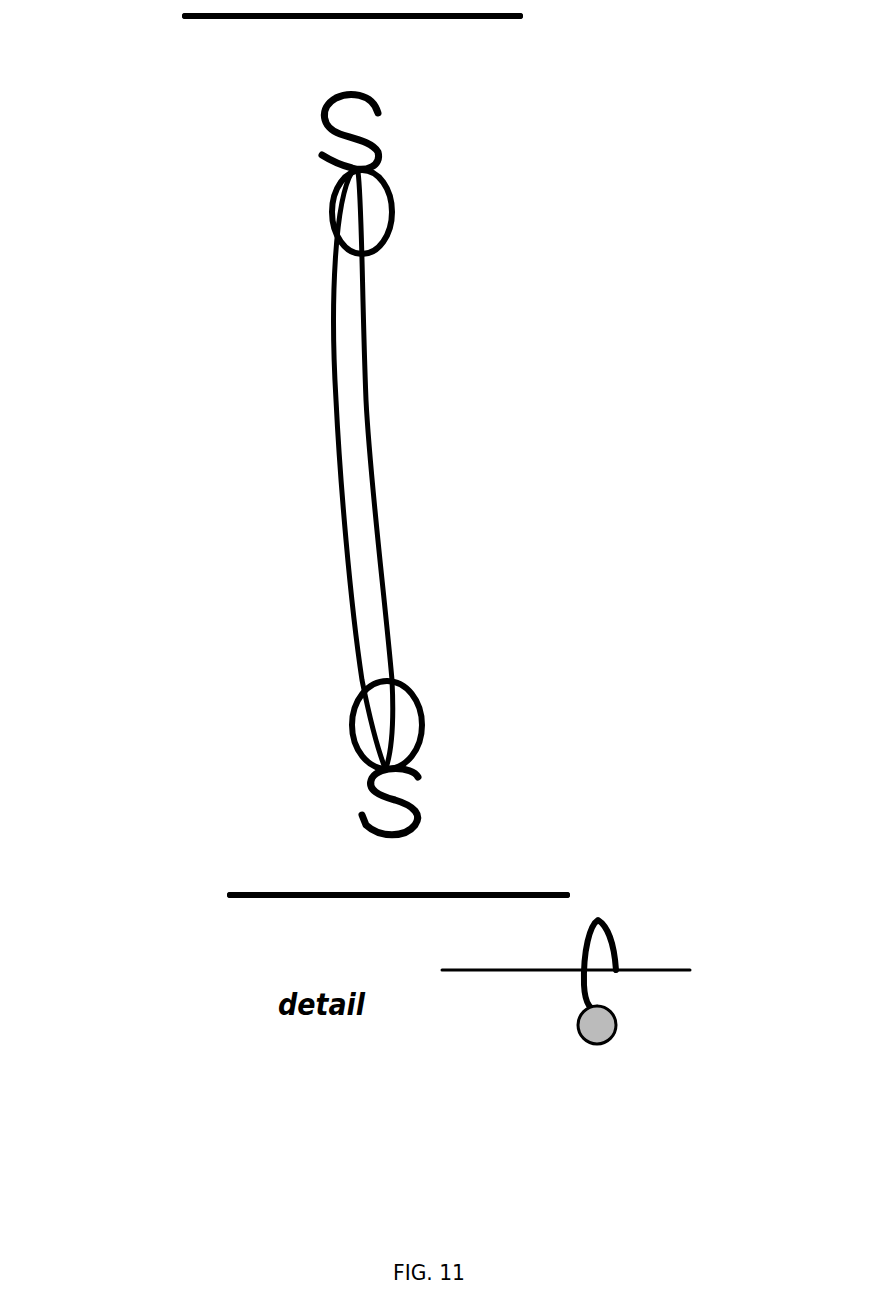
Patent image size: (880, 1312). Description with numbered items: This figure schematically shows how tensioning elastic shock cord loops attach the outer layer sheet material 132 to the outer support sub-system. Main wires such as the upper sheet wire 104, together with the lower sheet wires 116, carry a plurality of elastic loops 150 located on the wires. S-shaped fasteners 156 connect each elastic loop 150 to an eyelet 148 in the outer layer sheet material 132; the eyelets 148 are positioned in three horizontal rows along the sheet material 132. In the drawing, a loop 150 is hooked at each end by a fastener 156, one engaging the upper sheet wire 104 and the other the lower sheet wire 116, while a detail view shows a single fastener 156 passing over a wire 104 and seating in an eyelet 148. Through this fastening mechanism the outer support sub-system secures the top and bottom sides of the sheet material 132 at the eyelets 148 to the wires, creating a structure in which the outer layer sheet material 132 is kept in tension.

The upper sheet wire 104 is at (178, 16).
The lower sheet wire 116 is at (222, 893).
The outer layer sheet material 132 is at (330, 436).
The eyelet 148 is at (622, 1025).
The elastic loop 150 is at (325, 208).
The fastener 156 is at (325, 143).